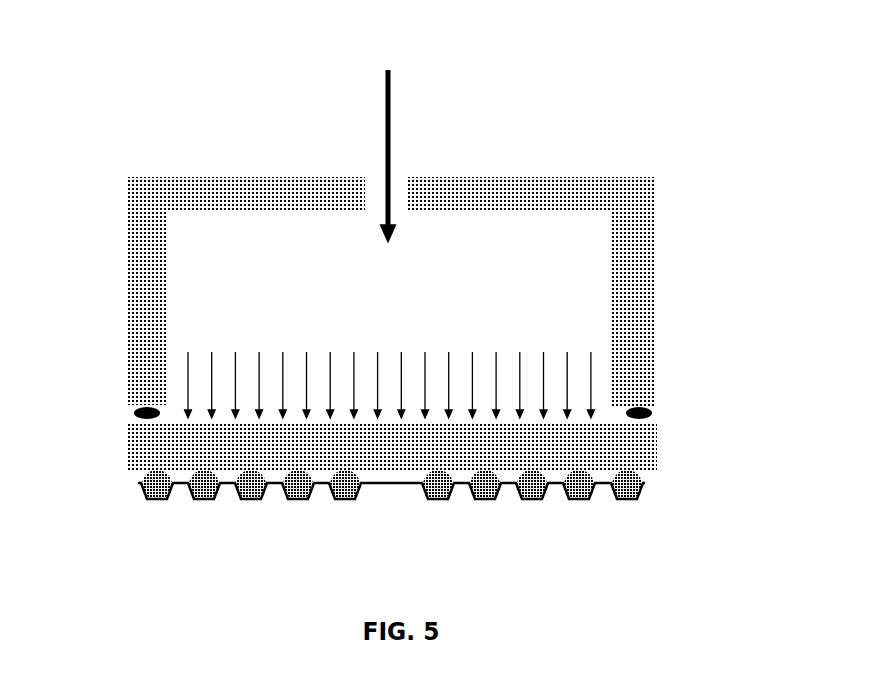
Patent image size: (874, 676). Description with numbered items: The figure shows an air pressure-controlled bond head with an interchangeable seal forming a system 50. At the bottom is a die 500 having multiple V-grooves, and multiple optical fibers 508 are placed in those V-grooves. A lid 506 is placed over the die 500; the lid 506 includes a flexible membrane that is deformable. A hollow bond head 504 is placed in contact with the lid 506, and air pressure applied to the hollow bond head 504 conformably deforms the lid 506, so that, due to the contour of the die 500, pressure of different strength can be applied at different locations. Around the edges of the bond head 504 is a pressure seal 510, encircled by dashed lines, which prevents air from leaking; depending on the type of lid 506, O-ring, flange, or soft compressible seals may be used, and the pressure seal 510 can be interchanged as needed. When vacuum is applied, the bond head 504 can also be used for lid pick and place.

The system 50 is at (157, 135).
The bond head 504 is at (664, 172).
The lid 506 is at (121, 434).
The pressure seal 510 is at (664, 402).
The die 500 is at (171, 504).
The optical fibers 508 is at (634, 493).